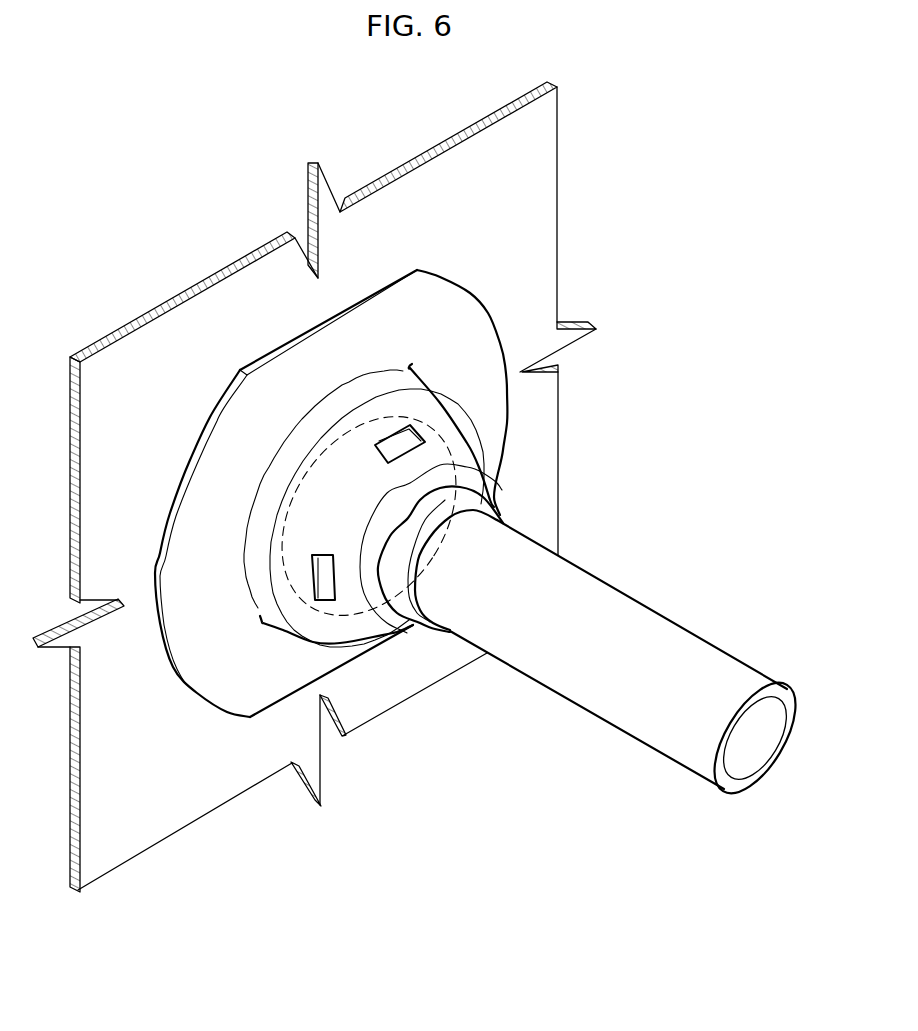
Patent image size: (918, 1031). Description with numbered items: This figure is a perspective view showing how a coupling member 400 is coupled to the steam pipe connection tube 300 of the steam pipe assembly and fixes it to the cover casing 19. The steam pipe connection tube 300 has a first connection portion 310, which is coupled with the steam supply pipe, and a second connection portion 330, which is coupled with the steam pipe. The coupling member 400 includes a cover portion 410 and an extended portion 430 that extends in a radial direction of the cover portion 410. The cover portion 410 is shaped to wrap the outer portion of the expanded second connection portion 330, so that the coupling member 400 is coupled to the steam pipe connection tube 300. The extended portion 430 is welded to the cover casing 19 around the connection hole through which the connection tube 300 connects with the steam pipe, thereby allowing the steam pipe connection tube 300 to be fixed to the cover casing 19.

The cover casing 19 is at (532, 186).
The steam pipe connection tube 300 is at (661, 603).
The first connection portion 310 is at (670, 737).
The second connection portion 330 is at (353, 603).
The coupling member 400 is at (520, 426).
The cover portion 410 is at (463, 452).
The extended portion 430 is at (207, 658).